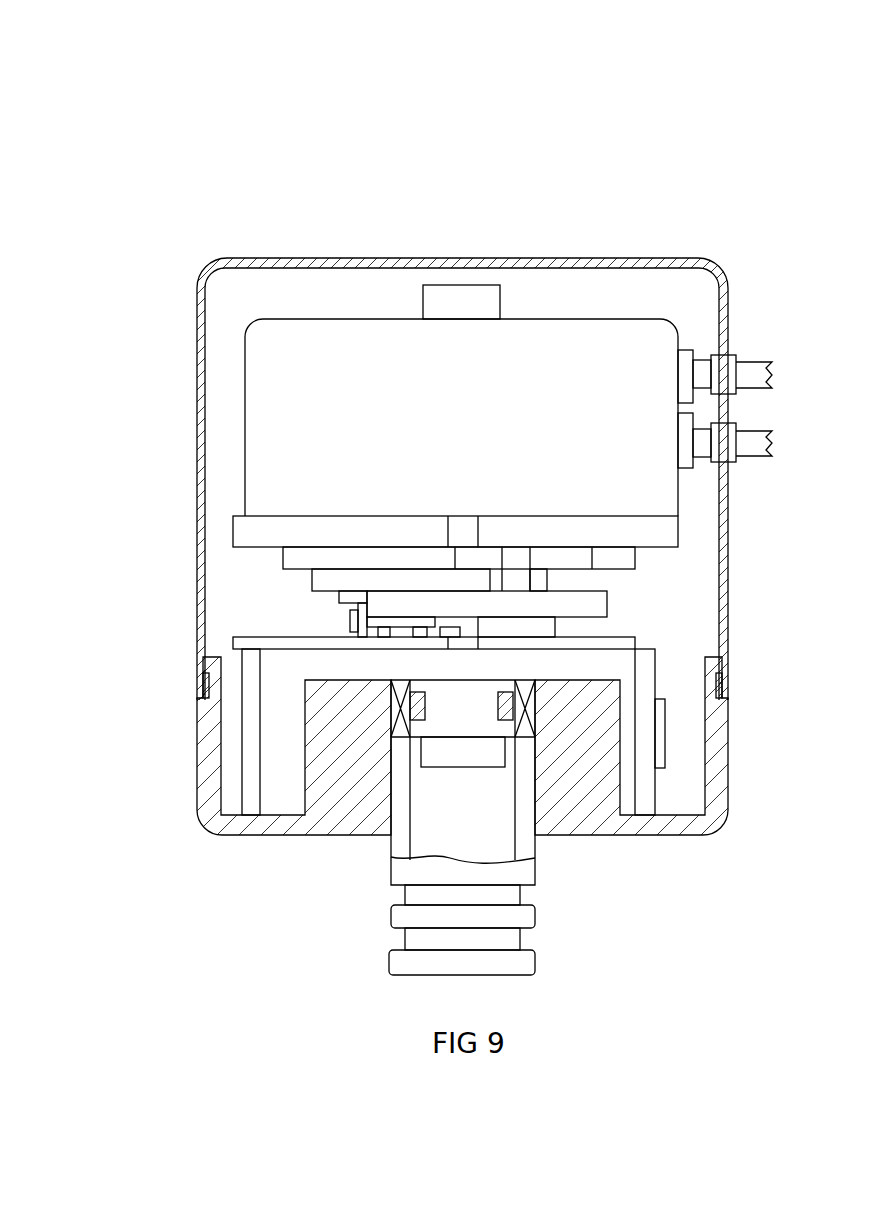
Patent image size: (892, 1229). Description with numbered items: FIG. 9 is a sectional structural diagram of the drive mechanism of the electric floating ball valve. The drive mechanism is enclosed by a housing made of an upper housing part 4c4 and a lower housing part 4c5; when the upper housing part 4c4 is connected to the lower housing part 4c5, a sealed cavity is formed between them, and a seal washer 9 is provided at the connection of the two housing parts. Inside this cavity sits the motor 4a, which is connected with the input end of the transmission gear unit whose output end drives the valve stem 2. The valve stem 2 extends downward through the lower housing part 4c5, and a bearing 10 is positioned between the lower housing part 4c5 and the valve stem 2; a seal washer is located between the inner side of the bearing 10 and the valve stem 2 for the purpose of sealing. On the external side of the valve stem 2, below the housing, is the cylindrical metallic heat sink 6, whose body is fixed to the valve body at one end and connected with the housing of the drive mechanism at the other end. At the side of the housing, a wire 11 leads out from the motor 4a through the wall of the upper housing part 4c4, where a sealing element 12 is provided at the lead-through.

The motor 4a is at (533, 355).
The sealing element 12 is at (736, 355).
The wire 11 is at (752, 375).
The upper housing part 4c4 is at (200, 427).
The seal washer 9 is at (207, 673).
The lower housing part 4c5 is at (212, 735).
The bearing 10 is at (527, 703).
The valve stem 2 is at (428, 808).
The heat sink 6 is at (420, 873).